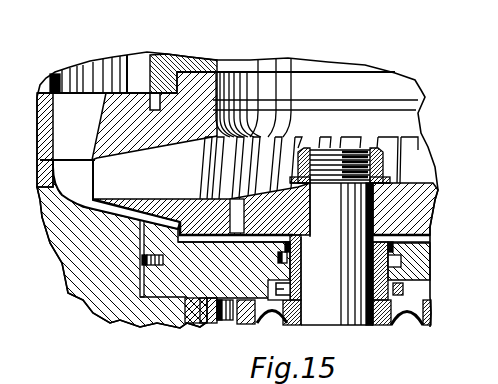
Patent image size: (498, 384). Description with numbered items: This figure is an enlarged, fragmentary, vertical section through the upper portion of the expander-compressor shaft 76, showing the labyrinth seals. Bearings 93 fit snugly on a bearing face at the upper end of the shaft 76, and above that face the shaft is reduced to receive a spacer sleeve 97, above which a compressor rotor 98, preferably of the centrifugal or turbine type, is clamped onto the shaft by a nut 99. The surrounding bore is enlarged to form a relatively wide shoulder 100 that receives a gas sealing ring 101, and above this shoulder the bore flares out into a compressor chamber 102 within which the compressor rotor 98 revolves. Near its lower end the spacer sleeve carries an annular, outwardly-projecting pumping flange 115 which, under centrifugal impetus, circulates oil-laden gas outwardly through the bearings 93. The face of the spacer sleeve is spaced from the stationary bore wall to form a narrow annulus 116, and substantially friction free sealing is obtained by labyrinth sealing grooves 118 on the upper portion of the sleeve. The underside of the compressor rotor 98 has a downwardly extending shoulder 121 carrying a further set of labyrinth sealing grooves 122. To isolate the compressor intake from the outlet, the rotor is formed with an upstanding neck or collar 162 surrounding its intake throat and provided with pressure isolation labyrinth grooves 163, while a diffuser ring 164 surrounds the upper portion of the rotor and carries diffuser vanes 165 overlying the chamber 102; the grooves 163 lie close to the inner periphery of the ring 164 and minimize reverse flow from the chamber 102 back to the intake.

The shaft 76 is at (330, 322).
The bearings 93 is at (401, 325).
The spacer sleeve 97 is at (301, 251).
The compressor rotor 98 is at (421, 216).
The nut 99 is at (385, 170).
The shoulder 100 is at (182, 307).
The gas sealing ring 101 is at (137, 290).
The compressor chamber 102 is at (73, 167).
The pumping flange 115 is at (290, 292).
The annulus 116 is at (393, 277).
The labyrinth sealing grooves 118 is at (430, 240).
The shoulder 121 is at (200, 199).
The labyrinth sealing grooves 122 is at (177, 227).
The neck or collar 162 is at (200, 80).
The pressure isolation labyrinth grooves 163 is at (147, 58).
The diffuser ring 164 is at (121, 92).
The diffuser vanes 165 is at (66, 66).